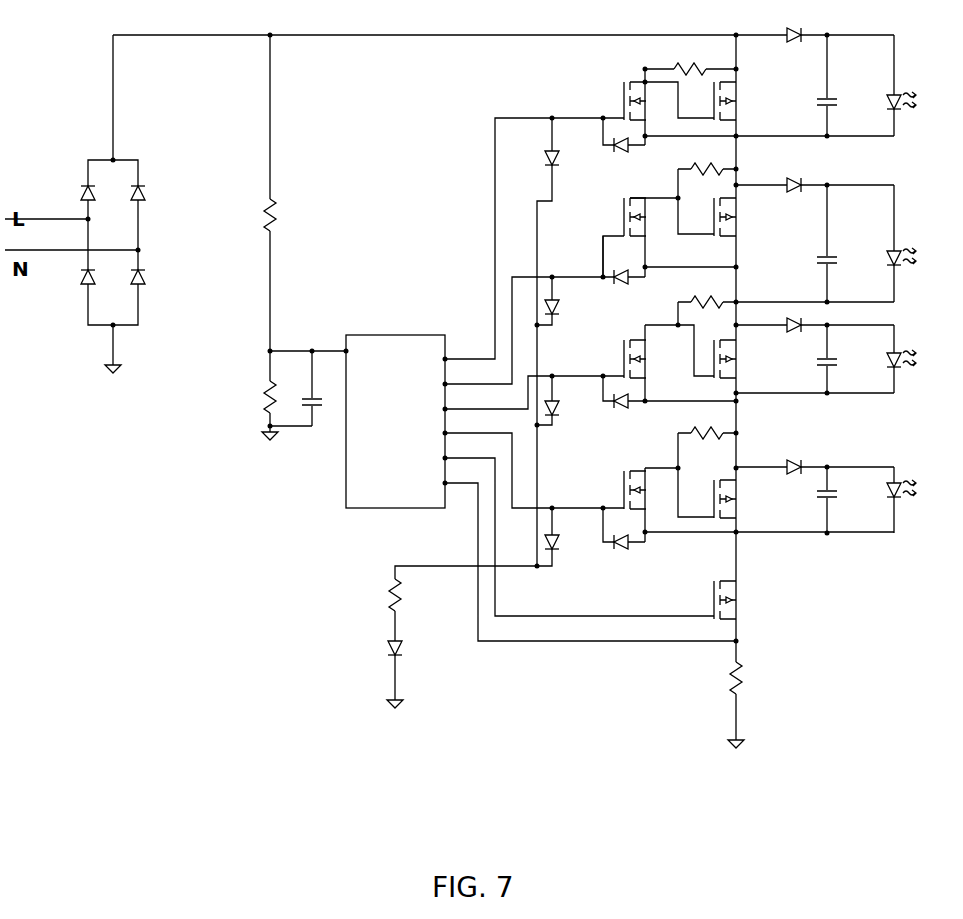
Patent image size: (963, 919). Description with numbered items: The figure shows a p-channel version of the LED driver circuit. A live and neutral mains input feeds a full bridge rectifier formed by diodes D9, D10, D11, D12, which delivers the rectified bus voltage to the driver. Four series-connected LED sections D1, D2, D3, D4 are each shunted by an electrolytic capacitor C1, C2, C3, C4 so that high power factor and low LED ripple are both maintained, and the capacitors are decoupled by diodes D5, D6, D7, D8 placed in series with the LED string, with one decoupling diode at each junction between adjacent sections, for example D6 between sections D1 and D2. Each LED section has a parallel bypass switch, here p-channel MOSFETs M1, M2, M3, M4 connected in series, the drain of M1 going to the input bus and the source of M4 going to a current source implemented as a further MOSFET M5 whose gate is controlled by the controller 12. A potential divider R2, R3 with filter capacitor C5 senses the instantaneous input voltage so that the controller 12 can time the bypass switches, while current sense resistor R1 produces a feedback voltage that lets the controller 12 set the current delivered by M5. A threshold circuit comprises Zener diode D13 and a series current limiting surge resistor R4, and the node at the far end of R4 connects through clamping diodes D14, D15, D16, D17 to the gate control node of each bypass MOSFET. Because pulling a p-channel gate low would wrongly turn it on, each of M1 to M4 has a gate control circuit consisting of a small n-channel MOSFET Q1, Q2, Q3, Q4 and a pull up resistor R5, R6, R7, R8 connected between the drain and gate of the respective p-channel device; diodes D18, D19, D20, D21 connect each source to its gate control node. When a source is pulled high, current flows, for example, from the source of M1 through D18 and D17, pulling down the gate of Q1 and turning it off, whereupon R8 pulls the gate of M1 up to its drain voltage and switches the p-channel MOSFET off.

The controller 12 is at (405, 335).
The LED section D1 is at (908, 88).
The LED section D2 is at (908, 245).
The LED section D3 is at (908, 346).
The LED section D4 is at (908, 477).
The decoupling diode D5 is at (794, 29).
The decoupling diode D6 is at (794, 179).
The decoupling diode D7 is at (794, 320).
The decoupling diode D8 is at (794, 461).
The bridge rectifier diode D9 is at (96, 184).
The bridge rectifier diode D10 is at (100, 270).
The bridge rectifier diode D11 is at (150, 184).
The bridge rectifier diode D12 is at (150, 270).
The Zener diode D13 is at (386, 641).
The clamping diode D14 is at (565, 535).
The clamping diode D15 is at (564, 401).
The clamping diode D16 is at (565, 300).
The clamping diode D17 is at (564, 151).
The diode D18 is at (616, 137).
The diode D19 is at (616, 269).
The diode D20 is at (616, 393).
The diode D21 is at (616, 534).
The n-channel MOSFET Q1 is at (645, 101).
The n-channel MOSFET Q2 is at (645, 217).
The n-channel MOSFET Q3 is at (645, 359).
The n-channel MOSFET Q4 is at (645, 490).
The bypass MOSFET M1 is at (738, 101).
The bypass MOSFET M2 is at (738, 217).
The bypass MOSFET M3 is at (738, 359).
The bypass MOSFET M4 is at (738, 499).
The current source MOSFET M5 is at (738, 600).
The current sense resistor R1 is at (745, 678).
The potential divider resistor R2 is at (279, 215).
The potential divider resistor R3 is at (279, 397).
The current limiting resistor R4 is at (404, 595).
The pull up resistor R5 is at (707, 427).
The pull up resistor R6 is at (707, 296).
The pull up resistor R7 is at (707, 163).
The pull up resistor R8 is at (690, 63).
The electrolytic capacitor C1 is at (832, 94).
The electrolytic capacitor C2 is at (832, 252).
The electrolytic capacitor C3 is at (832, 354).
The electrolytic capacitor C4 is at (832, 486).
The filter capacitor C5 is at (317, 393).